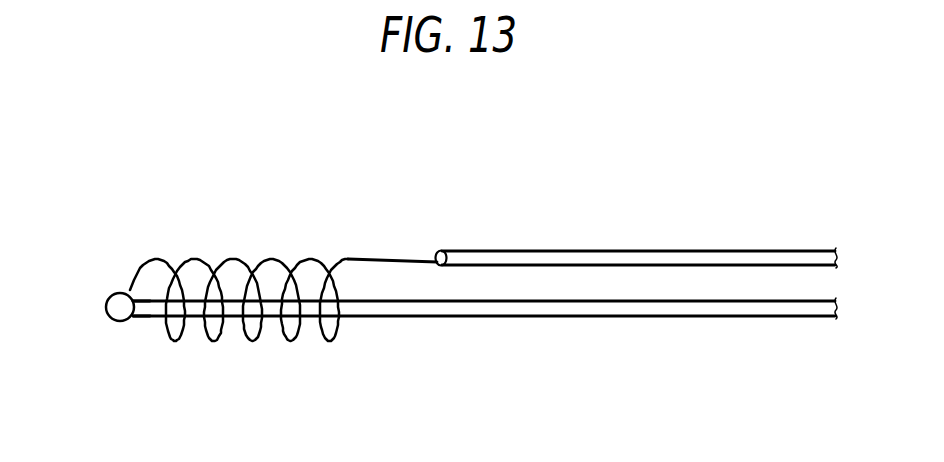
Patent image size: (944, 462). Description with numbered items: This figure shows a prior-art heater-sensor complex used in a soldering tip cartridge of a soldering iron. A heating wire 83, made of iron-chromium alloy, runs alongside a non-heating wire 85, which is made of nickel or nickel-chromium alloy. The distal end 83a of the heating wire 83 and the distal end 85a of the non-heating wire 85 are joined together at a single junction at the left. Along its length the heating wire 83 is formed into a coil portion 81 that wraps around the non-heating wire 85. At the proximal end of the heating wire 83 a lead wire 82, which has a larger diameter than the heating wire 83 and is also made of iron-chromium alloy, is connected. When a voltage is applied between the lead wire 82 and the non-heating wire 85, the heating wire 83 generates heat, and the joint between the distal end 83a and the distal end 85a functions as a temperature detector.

The coil portion 81 is at (240, 258).
The lead wire 82 is at (591, 249).
The heating wire 83 is at (379, 250).
The distal end of heating wire 83a is at (111, 297).
The non-heating wire 85 is at (590, 319).
The distal end of non-heating wire 85a is at (110, 322).